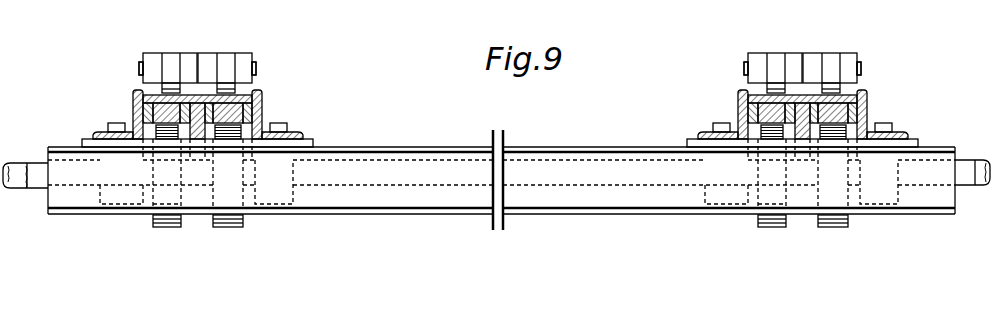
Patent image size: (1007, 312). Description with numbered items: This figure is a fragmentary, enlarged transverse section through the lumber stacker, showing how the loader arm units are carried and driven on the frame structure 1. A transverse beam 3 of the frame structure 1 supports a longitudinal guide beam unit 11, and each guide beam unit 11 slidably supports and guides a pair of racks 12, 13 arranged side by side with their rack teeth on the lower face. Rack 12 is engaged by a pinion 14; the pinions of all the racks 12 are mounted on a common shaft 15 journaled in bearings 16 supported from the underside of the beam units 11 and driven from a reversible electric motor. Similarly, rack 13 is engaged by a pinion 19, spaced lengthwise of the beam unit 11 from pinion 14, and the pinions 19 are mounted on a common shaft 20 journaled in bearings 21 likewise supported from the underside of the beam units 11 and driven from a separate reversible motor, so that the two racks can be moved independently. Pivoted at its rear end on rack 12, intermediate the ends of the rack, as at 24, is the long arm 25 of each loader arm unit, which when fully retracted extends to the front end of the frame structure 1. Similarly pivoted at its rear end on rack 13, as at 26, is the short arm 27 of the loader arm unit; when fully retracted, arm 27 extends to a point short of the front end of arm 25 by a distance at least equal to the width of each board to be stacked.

The frame structure 1 is at (567, 147).
The transverse beam 3 is at (390, 147).
The longitudinal guide beam unit 11 is at (133, 120).
The rack 12 is at (135, 93).
The rack 13 is at (262, 101).
The pinion 14 is at (167, 228).
The common shaft 15 is at (14, 162).
The bearing 16 is at (117, 208).
The pinion 19 is at (226, 228).
The common shaft 20 is at (40, 165).
The bearing 21 is at (273, 206).
The pivot 24 is at (139, 67).
The long arm 25 is at (152, 57).
The pivot 26 is at (257, 67).
The short arm 27 is at (243, 58).